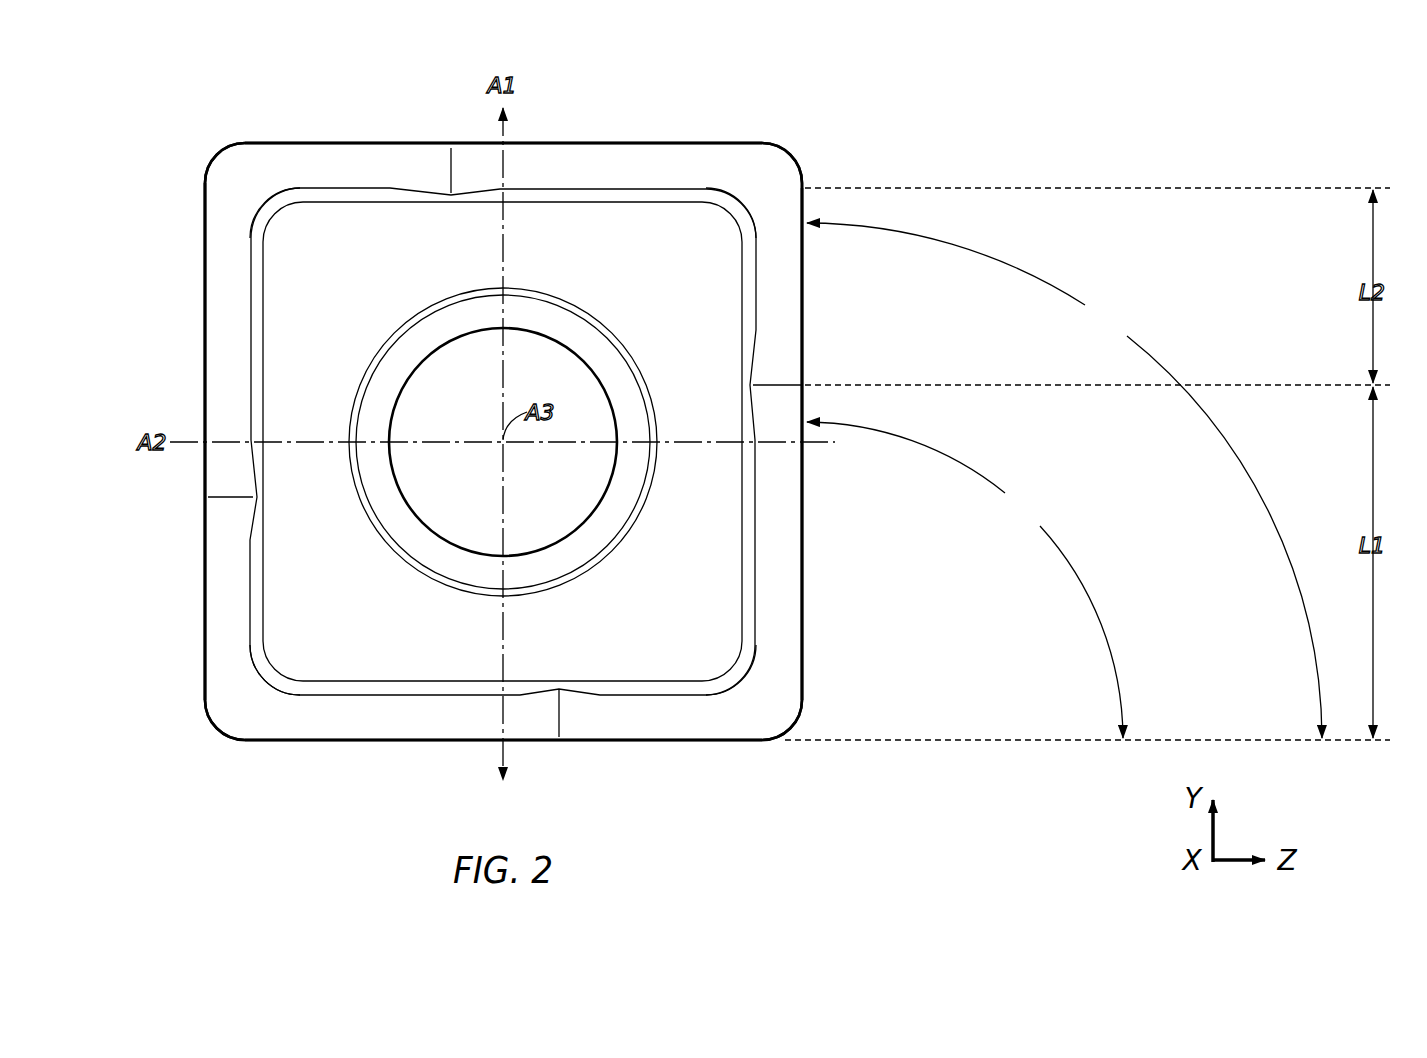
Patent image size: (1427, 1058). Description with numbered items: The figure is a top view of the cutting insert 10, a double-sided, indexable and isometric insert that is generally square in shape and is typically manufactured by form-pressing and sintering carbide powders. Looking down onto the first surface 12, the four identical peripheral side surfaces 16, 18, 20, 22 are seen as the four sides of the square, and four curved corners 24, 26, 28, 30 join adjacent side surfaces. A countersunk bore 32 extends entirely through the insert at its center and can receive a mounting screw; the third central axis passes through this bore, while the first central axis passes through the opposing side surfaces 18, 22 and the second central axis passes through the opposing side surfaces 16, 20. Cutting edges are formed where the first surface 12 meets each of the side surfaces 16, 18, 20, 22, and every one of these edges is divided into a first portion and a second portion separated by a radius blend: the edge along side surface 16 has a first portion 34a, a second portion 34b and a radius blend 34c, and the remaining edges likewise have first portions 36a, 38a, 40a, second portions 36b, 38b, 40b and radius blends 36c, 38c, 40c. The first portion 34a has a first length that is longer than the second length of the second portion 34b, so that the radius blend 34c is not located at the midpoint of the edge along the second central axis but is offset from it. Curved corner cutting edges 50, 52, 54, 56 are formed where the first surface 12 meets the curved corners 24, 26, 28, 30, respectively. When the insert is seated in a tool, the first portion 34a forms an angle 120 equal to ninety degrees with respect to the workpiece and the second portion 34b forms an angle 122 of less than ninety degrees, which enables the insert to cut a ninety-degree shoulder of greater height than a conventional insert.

The cutting insert 10 is at (938, 104).
The first surface 12 is at (663, 633).
The peripheral side surface 16 is at (811, 517).
The peripheral side surface 18 is at (555, 128).
The peripheral side surface 20 is at (197, 303).
The peripheral side surface 22 is at (534, 752).
The curved corner 24 is at (791, 140).
The curved corner 26 is at (216, 138).
The curved corner 28 is at (217, 742).
The curved corner 30 is at (793, 746).
The countersunk bore 32 is at (548, 350).
The first portion 34a is at (802, 605).
The second portion 34b is at (802, 290).
The radius blend 34c is at (802, 385).
The first portion 36a is at (672, 143).
The second portion 36b is at (362, 143).
The radius blend 36c is at (450, 143).
The first portion 38a is at (204, 255).
The second portion 38b is at (205, 604).
The radius blend 38c is at (205, 497).
The first portion 40a is at (342, 740).
The second portion 40b is at (643, 742).
The radius blend 40c is at (559, 742).
The corner cutting edge 50 is at (795, 155).
The corner cutting edge 52 is at (213, 158).
The corner cutting edge 54 is at (212, 728).
The corner cutting edge 56 is at (795, 727).
The angle 120 is at (965, 580).
The angle 122 is at (1064, 480).